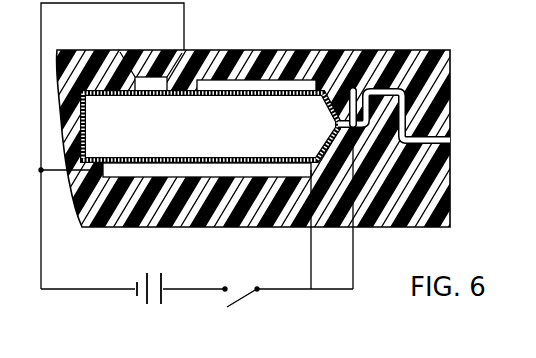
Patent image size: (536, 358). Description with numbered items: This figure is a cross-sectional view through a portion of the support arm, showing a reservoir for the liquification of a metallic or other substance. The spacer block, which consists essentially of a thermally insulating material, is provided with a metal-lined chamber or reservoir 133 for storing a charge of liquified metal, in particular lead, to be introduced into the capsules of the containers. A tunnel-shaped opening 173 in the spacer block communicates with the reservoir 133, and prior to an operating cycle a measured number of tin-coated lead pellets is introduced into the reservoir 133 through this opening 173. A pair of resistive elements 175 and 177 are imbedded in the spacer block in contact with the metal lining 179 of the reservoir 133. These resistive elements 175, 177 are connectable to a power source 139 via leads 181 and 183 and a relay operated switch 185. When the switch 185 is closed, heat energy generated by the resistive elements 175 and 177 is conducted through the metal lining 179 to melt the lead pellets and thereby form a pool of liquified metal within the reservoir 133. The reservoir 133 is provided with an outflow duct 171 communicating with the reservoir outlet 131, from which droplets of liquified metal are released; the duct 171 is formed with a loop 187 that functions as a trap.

The reservoir outlet 131 is at (450, 128).
The reservoir 133 is at (283, 110).
The power source 139 is at (163, 283).
The outflow duct 171 is at (428, 126).
The tunnel-shaped opening 173 is at (143, 63).
The resistive element 175 is at (231, 85).
The resistive element 177 is at (283, 172).
The metal lining 179 is at (100, 92).
The lead 181 is at (72, 288).
The lead 183 is at (355, 253).
The relay operated switch 185 is at (244, 299).
The loop 187 is at (386, 93).